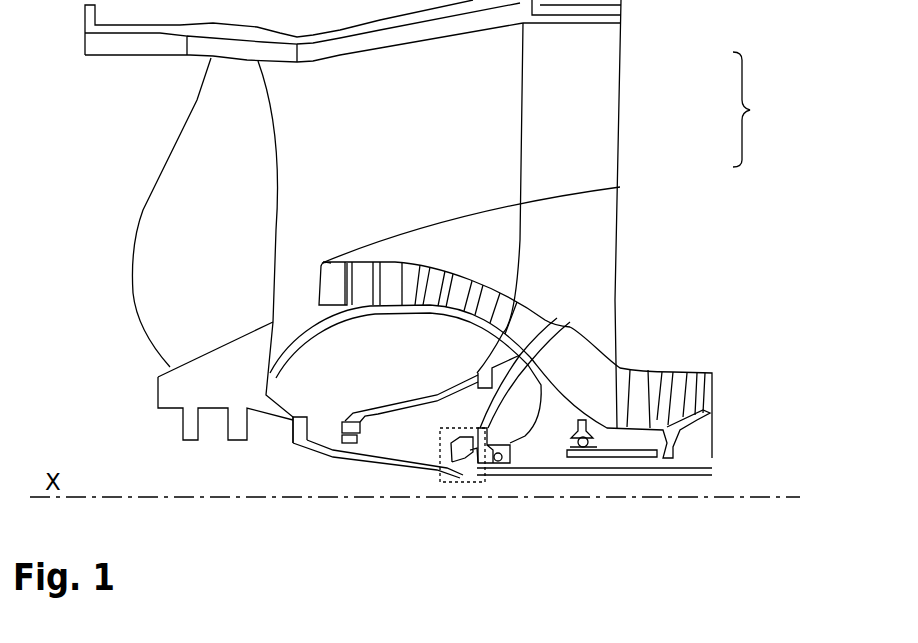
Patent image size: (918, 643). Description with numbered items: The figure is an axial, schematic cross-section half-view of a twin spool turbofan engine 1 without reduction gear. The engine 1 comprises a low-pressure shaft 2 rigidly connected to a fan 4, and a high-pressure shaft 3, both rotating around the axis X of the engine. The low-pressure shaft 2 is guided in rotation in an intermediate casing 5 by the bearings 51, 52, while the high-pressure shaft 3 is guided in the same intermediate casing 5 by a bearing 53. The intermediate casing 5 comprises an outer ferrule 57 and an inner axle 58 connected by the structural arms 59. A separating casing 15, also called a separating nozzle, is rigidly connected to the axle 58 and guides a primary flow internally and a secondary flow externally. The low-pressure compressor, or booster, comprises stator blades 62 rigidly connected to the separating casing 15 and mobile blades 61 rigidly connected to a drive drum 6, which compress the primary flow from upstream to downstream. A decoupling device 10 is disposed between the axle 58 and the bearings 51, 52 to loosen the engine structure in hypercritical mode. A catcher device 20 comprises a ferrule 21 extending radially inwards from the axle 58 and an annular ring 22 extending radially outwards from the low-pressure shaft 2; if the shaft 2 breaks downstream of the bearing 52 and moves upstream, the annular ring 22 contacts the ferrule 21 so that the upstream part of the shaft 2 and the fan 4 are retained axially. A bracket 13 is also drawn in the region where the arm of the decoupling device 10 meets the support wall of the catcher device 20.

The twin spool turbofan engine 1 is at (120, 130).
The low-pressure shaft 2 is at (310, 442).
The high-pressure shaft 3 is at (633, 457).
The fan 4 is at (170, 227).
The intermediate casing 5 is at (689, 214).
The drive drum 6 is at (298, 348).
The decoupling device 10 is at (565, 330).
The bracket arm 13 is at (483, 405).
The separating casing 15 is at (423, 247).
The catcher device 20 is at (444, 491).
The ferrule 21 is at (453, 462).
The annular ring 22 is at (470, 475).
The bearing 51 is at (353, 445).
The bearing 52 is at (493, 463).
The bearing 53 is at (582, 457).
The outer ferrule 57 is at (610, 15).
The inner axle 58 is at (603, 215).
The structural arms 59 is at (597, 99).
The mobile blades 61 is at (363, 273).
The stator blades 62 is at (337, 290).